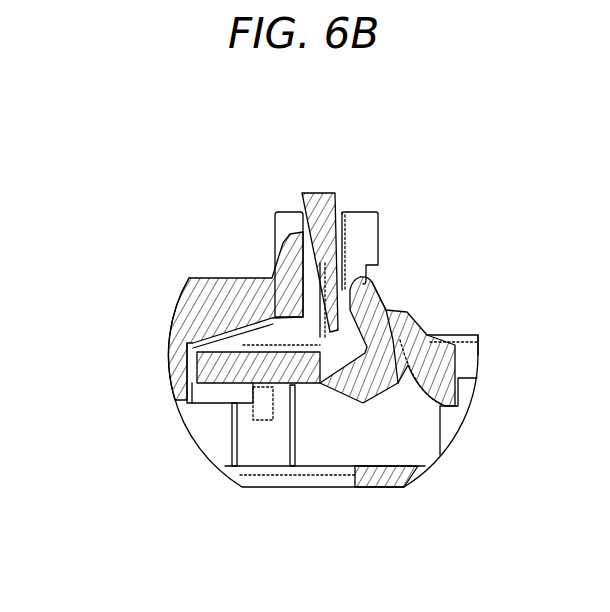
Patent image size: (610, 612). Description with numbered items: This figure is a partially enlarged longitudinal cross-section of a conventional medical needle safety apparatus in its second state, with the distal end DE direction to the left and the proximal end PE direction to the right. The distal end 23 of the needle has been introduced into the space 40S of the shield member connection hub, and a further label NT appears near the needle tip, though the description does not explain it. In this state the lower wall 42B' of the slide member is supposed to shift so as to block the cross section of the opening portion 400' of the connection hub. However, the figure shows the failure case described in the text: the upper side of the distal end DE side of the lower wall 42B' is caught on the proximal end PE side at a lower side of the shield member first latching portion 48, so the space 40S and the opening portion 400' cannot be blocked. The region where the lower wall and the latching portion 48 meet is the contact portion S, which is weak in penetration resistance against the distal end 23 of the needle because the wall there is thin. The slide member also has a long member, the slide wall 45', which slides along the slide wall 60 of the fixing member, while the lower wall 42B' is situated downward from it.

The distal end of the needle 23 is at (300, 192).
The space of the shield member connection hub 40S is at (305, 262).
The nozzle tip NT is at (333, 318).
The shield member first latching portion 48 is at (253, 358).
The slide wall 45' is at (412, 289).
The slide wall of the fixing member 60 is at (412, 368).
The contact portion S is at (313, 388).
The opening portion of the connection hub 400' is at (353, 393).
The lower wall of the slide member 42B' is at (387, 412).
The distal end DE is at (130, 360).
The proximal end PE is at (488, 360).